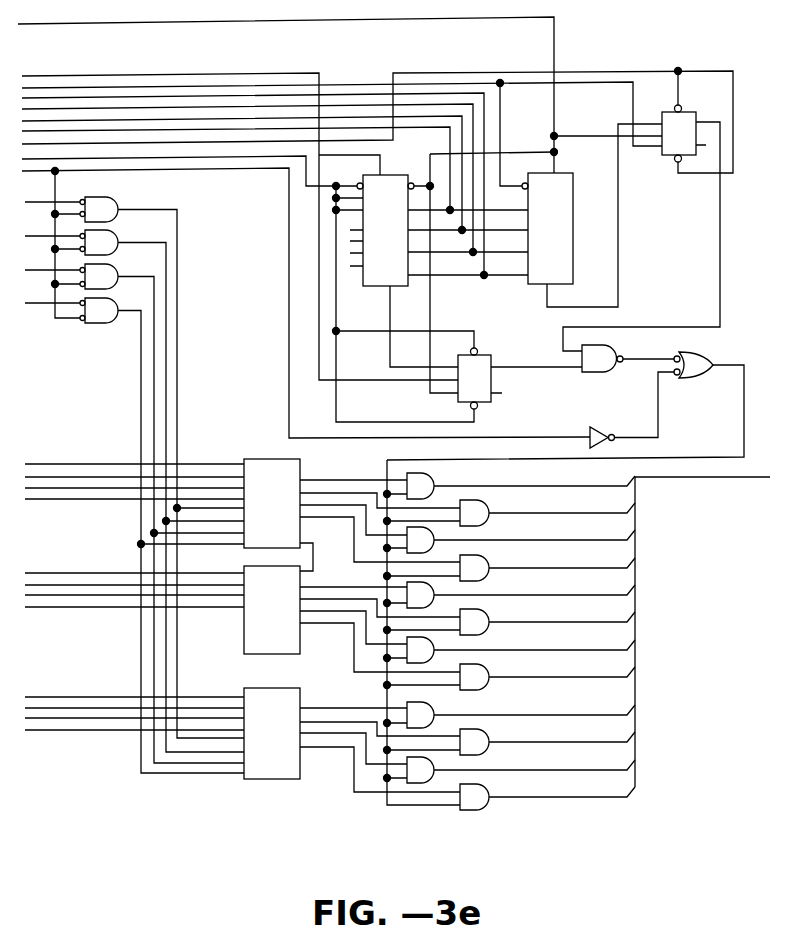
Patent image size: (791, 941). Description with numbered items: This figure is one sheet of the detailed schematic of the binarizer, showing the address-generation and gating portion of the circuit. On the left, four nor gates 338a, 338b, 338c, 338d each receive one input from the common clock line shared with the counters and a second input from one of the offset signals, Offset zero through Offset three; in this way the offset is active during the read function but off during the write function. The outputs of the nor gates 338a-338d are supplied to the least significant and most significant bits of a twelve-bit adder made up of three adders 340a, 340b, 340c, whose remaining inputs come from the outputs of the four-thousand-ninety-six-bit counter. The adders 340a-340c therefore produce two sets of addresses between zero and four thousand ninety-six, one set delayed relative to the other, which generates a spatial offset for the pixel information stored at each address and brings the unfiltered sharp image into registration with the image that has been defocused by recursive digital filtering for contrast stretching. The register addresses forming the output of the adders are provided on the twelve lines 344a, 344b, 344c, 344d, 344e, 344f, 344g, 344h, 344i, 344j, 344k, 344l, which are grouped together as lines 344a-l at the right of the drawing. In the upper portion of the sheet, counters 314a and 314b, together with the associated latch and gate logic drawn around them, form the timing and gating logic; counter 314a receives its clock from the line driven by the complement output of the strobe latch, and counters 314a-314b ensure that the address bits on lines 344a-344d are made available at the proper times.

The counter 314a is at (404, 271).
The counter 314b is at (592, 215).
The nor gate 338a is at (108, 196).
The nor gate 338b is at (112, 230).
The nor gate 338c is at (112, 264).
The nor gate 338d is at (100, 323).
The adder 340a is at (242, 515).
The adder 340b is at (242, 619).
The adder 340c is at (242, 740).
The line 344a is at (530, 483).
The line 344b is at (530, 510).
The line 344c is at (530, 537).
The line 344d is at (530, 565).
The line 344e is at (530, 592).
The line 344f is at (530, 619).
The line 344g is at (530, 647).
The line 344h is at (530, 674).
The line 344i is at (530, 712).
The line 344j is at (530, 739).
The line 344k is at (530, 767).
The line 344l is at (530, 794).
The lines 344a-l is at (661, 478).